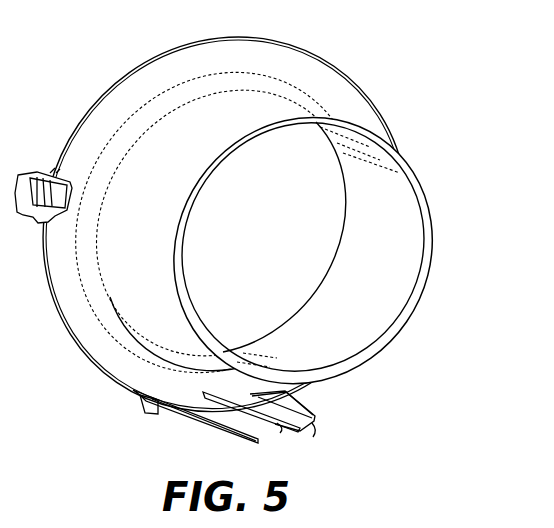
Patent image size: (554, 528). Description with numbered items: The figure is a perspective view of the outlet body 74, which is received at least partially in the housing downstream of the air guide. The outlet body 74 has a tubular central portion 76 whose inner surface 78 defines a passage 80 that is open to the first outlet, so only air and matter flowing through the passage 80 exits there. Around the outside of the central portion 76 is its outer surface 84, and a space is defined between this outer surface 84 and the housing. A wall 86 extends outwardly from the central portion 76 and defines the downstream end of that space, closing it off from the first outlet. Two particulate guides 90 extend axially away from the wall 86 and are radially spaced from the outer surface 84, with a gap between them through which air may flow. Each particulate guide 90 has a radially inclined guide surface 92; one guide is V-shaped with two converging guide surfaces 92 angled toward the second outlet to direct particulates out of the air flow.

The outlet body 74 is at (247, 241).
The central portion 76 is at (427, 207).
The inner surface 78 is at (395, 281).
The passage 80 is at (299, 266).
The outer surface 84 is at (257, 110).
The wall 86 is at (140, 84).
The particulate guides 90 is at (193, 417).
The guide surface 92 is at (227, 433).